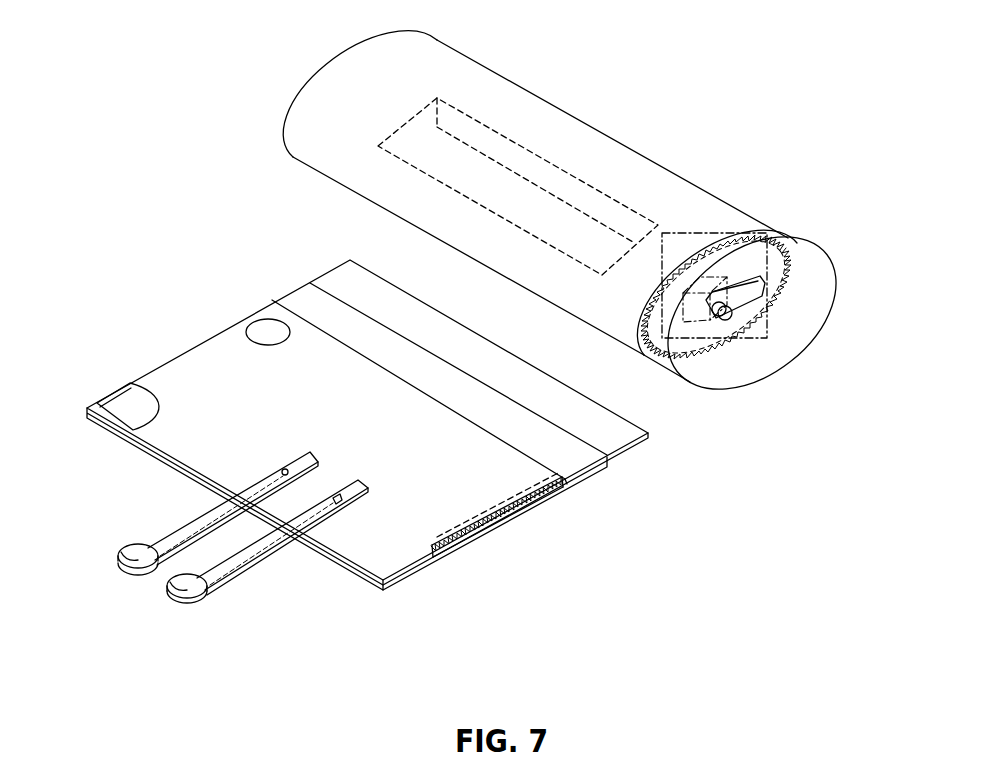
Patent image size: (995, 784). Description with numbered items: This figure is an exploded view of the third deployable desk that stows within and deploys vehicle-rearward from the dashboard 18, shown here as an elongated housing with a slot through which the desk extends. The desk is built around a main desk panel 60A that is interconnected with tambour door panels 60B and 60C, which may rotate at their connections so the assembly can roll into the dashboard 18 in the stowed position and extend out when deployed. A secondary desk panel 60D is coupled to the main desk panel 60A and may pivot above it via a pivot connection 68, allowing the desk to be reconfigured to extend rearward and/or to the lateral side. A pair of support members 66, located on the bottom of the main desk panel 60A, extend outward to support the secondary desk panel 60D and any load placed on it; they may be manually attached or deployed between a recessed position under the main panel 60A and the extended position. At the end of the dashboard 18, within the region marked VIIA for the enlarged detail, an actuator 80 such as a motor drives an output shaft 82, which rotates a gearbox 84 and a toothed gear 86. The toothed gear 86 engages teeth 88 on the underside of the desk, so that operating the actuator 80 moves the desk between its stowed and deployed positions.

The dashboard 18 is at (488, 92).
The main desk panel 60A is at (360, 577).
The tambour door panel 60B is at (297, 300).
The tambour door panel 60C is at (338, 277).
The secondary desk panel 60D is at (198, 357).
The support members 66 is at (178, 584).
The pivot connection 68 is at (100, 403).
The actuator 80 is at (778, 297).
The output shaft 82 is at (698, 268).
The gearbox 84 is at (723, 257).
The toothed gear 86 is at (708, 330).
The teeth 88 is at (793, 255).
The detail view region VIIA is at (669, 233).